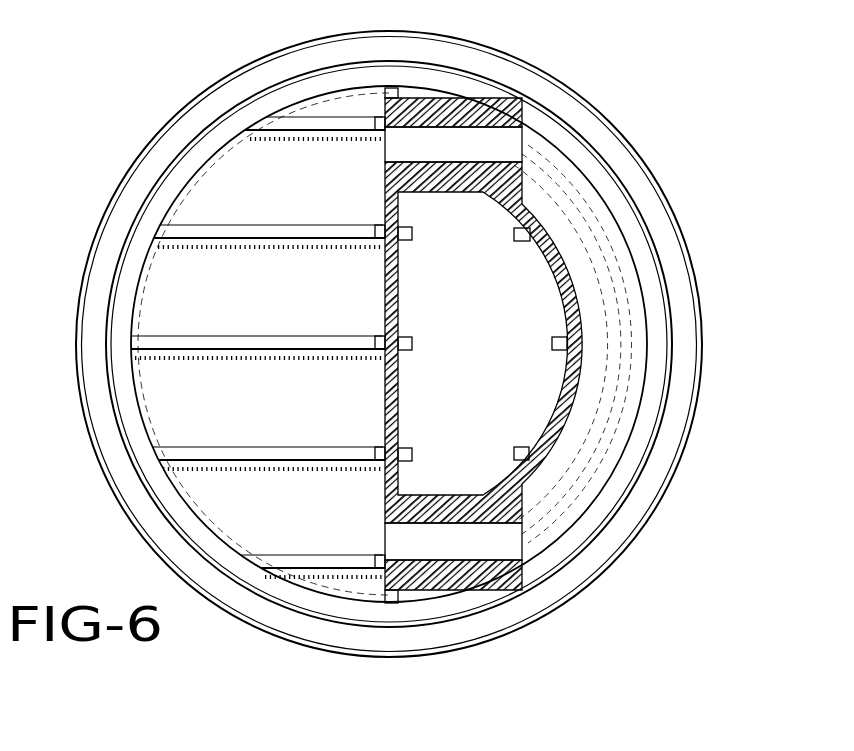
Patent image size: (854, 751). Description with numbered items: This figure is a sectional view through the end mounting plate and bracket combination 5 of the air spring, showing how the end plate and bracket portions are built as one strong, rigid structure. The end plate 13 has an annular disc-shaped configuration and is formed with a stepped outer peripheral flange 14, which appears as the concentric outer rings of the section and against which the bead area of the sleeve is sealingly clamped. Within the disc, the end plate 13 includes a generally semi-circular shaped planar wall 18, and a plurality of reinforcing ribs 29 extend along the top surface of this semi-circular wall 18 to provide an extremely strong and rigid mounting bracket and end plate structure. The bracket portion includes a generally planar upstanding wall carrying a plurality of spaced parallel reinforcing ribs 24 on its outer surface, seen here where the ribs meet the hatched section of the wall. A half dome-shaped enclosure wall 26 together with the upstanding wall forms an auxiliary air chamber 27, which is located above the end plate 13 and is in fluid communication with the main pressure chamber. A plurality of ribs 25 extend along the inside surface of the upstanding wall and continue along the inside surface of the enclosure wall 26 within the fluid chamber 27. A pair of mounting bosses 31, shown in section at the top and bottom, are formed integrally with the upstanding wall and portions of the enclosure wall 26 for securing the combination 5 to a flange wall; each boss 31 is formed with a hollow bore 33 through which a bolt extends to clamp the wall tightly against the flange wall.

The end mounting plate and bracket combination 5 is at (686, 142).
The end plate 13 is at (196, 182).
The stepped outer peripheral flange 14 is at (120, 222).
The semi-circular shaped planar wall 18 is at (160, 283).
The reinforcing ribs 24 is at (375, 229).
The ribs 25 is at (413, 233).
The half dome-shaped enclosure wall 26 is at (572, 290).
The auxiliary air chamber 27 is at (548, 371).
The reinforcing ribs 29 is at (306, 230).
The mounting bosses 31 is at (500, 108).
The hollow bore 33 is at (512, 147).